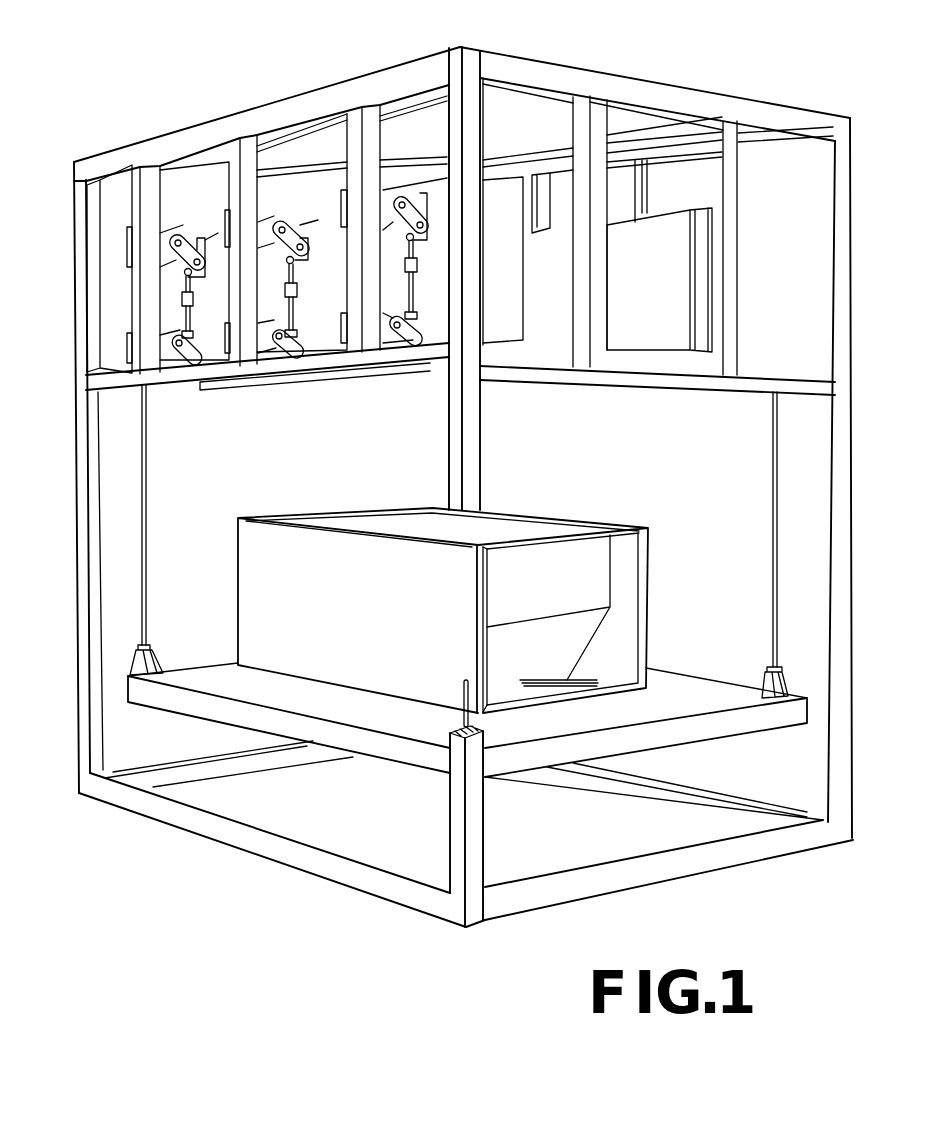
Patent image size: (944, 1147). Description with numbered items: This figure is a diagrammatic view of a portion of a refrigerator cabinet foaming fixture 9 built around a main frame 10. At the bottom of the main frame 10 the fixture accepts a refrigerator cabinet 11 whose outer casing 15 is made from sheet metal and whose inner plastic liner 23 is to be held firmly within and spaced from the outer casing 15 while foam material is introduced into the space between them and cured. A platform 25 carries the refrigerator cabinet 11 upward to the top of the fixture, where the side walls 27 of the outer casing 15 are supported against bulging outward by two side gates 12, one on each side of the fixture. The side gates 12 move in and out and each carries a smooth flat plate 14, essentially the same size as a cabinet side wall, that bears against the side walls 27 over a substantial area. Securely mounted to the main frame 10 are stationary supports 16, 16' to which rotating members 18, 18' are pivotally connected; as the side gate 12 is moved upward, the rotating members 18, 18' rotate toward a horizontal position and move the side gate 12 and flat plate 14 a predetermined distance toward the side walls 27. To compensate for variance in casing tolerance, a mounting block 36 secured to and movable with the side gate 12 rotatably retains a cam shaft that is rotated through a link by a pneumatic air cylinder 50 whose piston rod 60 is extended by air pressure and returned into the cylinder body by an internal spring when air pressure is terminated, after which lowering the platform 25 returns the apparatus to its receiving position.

The refrigerator cabinet foaming fixture 9 is at (636, 76).
The main frame 10 is at (73, 384).
The refrigerator cabinet 11 is at (623, 510).
The side gate 12 is at (334, 297).
The flat plate 14 is at (692, 322).
The outer casing 15 is at (364, 613).
The stationary support 16 is at (274, 264).
The stationary support 16' is at (276, 314).
The rotating member 18 is at (299, 204).
The rotating member 18' is at (292, 364).
The inner plastic liner 23 is at (492, 524).
The platform 25 is at (692, 681).
The side wall 27 is at (248, 542).
The mounting block 36 is at (204, 239).
The pneumatic air cylinder 50 is at (192, 315).
The piston rod 60 is at (184, 276).